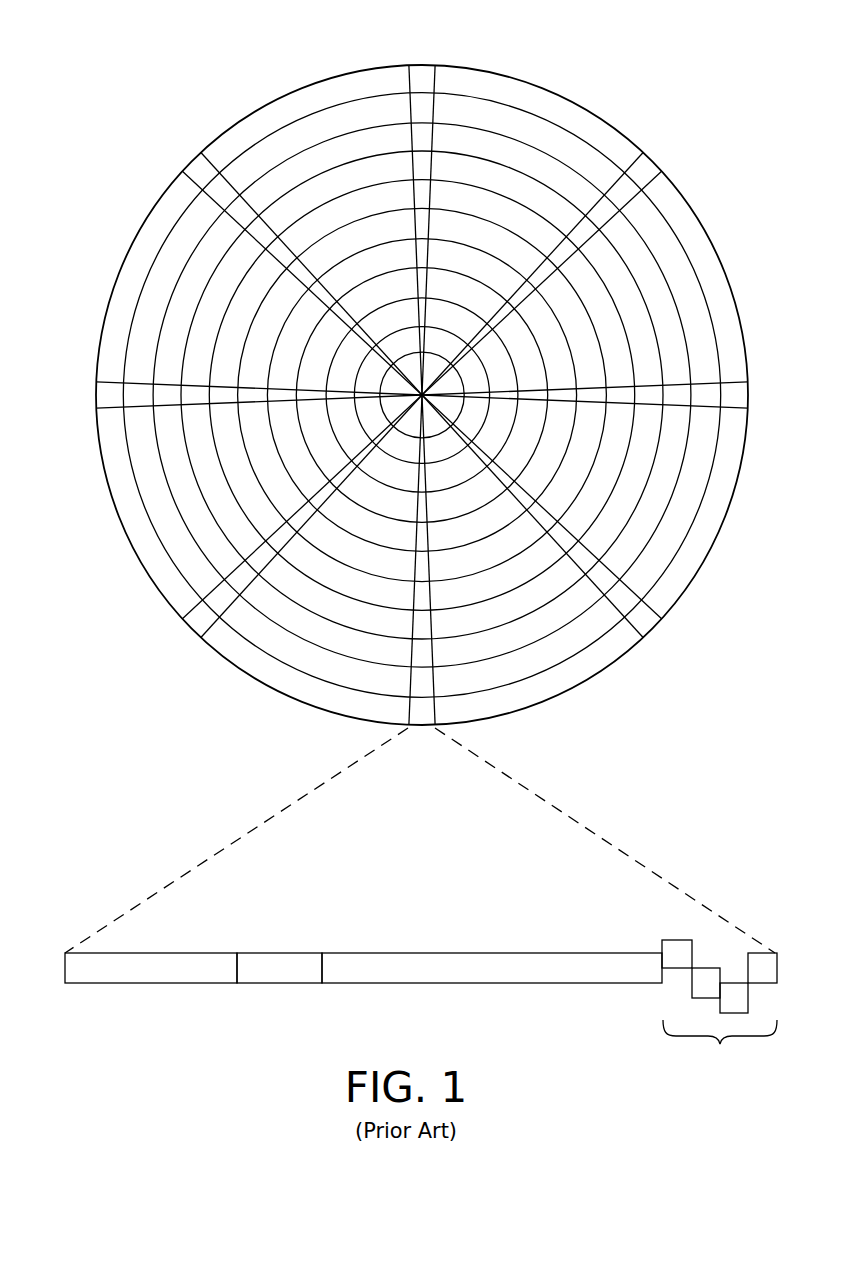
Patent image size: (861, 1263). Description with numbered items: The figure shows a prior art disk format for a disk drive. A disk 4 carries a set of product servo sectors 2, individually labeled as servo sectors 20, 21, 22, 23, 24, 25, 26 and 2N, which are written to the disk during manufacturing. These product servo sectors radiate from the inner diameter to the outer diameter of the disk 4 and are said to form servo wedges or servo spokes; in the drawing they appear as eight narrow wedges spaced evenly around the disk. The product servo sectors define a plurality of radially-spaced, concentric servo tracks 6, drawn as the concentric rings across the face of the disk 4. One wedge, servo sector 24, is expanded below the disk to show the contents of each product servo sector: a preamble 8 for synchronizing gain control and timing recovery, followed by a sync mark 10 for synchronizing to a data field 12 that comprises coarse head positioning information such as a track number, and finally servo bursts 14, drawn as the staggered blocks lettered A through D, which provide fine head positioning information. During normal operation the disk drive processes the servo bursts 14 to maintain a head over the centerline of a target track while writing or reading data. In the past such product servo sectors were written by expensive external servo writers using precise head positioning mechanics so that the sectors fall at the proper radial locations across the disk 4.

The disk 4 is at (178, 65).
The servo tracks 6 is at (533, 128).
The product servo sectors 2 is at (424, 407).
The product servo sector 20 is at (425, 72).
The product servo sector 21 is at (645, 167).
The product servo sector 22 is at (740, 395).
The product servo sector 23 is at (645, 622).
The product servo sector 24 is at (277, 803).
The product servo sector 25 is at (197, 623).
The product servo sector 26 is at (102, 393).
The product servo sector 2N is at (198, 167).
The preamble 8 is at (130, 984).
The sync mark 10 is at (275, 984).
The data field 12 is at (480, 984).
The servo bursts 14 is at (645, 919).